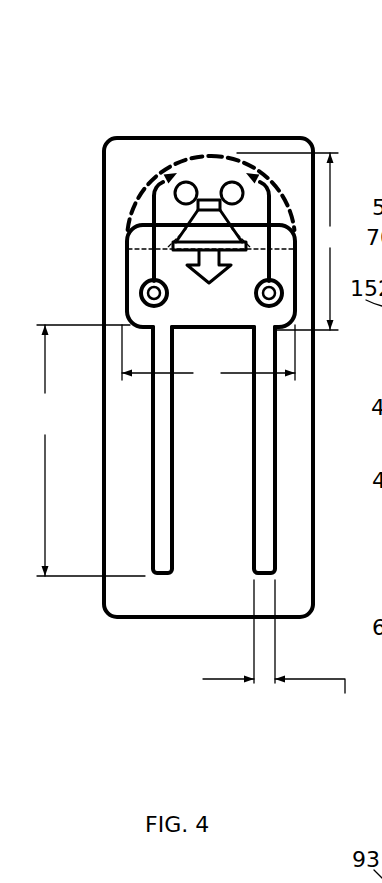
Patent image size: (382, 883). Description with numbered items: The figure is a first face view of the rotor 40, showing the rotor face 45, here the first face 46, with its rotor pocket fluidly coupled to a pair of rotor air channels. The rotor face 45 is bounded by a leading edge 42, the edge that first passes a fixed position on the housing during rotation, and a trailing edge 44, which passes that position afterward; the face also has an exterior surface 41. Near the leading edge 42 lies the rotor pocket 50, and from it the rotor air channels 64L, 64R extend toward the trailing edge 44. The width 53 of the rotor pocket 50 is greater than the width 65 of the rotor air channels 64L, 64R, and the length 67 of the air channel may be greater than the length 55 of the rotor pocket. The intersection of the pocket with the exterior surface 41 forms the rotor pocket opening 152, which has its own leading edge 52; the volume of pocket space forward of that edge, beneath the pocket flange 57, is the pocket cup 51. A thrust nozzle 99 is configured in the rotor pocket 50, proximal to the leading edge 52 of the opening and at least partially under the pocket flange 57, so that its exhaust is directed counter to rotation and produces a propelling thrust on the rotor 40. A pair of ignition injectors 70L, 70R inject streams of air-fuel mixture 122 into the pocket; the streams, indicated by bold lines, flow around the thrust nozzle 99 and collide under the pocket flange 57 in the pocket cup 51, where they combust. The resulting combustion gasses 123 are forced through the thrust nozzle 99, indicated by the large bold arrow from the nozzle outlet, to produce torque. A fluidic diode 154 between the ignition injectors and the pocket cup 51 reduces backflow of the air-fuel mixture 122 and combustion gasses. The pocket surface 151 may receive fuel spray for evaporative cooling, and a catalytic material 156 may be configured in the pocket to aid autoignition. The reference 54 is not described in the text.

The rotor 40 is at (140, 119).
The exterior surface 41 is at (294, 496).
The leading edge 42 is at (238, 127).
The trailing edge 44 is at (145, 629).
The rotor face 45 is at (294, 429).
The first face 46 is at (300, 554).
The rotor pocket 50 is at (246, 318).
The pocket cup 51 is at (192, 165).
The leading edge of the rotor pocket opening 52 is at (173, 180).
The width of the rotor pocket 53 is at (208, 355).
The lower corner wall 54 is at (125, 318).
The length of the rotor pocket 55 is at (291, 241).
The pocket flange 57 is at (199, 176).
The rotor air channel 64L is at (162, 453).
The rotor air channel 64R is at (263, 533).
The width of the rotor air channels 65 is at (279, 653).
The length of the rotor air channel 67 is at (91, 450).
The ignition injector 70L is at (141, 288).
The ignition injector 70R is at (283, 298).
The thrust nozzle 99 is at (193, 170).
The air-fuel mixture 122 is at (158, 180).
The combustion gasses 123 is at (128, 313).
The pocket surface 151 is at (232, 173).
The rotor pocket opening 152 is at (157, 280).
The fluidic diode 154 is at (123, 240).
The catalytic material 156 is at (262, 188).